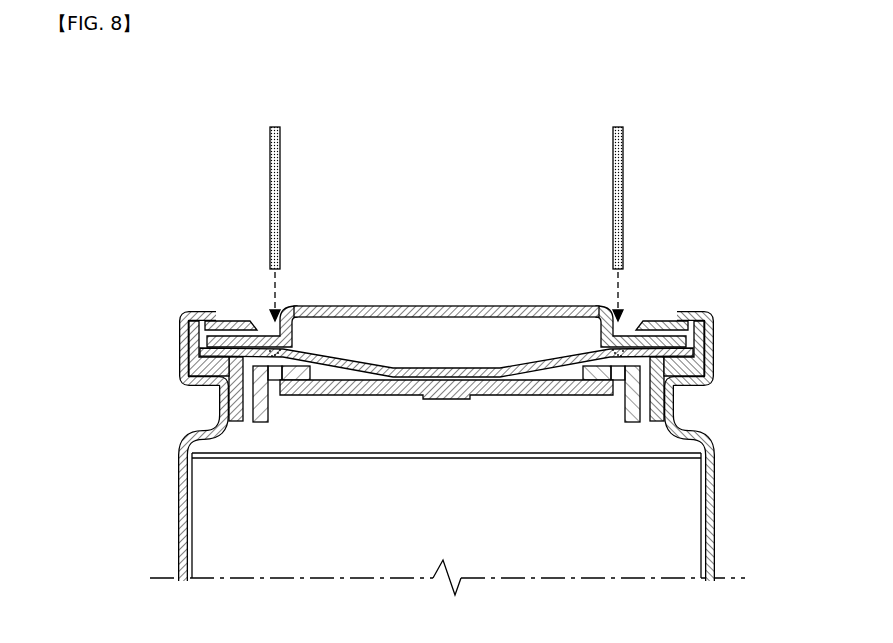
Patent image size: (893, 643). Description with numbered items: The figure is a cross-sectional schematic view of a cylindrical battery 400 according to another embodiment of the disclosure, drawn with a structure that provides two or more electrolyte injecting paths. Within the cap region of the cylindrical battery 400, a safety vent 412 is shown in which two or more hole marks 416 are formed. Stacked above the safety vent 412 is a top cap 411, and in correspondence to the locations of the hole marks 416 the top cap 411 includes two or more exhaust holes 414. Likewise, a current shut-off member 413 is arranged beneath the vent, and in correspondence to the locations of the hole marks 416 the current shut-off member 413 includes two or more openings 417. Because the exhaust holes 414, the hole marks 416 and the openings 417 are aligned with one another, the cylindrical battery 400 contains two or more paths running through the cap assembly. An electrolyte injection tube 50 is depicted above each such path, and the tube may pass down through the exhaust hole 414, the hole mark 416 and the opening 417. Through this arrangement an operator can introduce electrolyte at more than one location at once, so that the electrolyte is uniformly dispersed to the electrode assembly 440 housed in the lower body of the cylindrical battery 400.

The cylindrical battery 400 is at (178, 143).
The electrolyte injection tube 50 is at (280, 178).
The top cap 411 is at (433, 307).
The safety vent 412 is at (550, 362).
The current shut-off member 413 is at (340, 388).
The exhaust hole 414 is at (280, 332).
The hole mark 416 is at (240, 349).
The opening 417 is at (273, 370).
The electrode assembly 440 is at (215, 517).